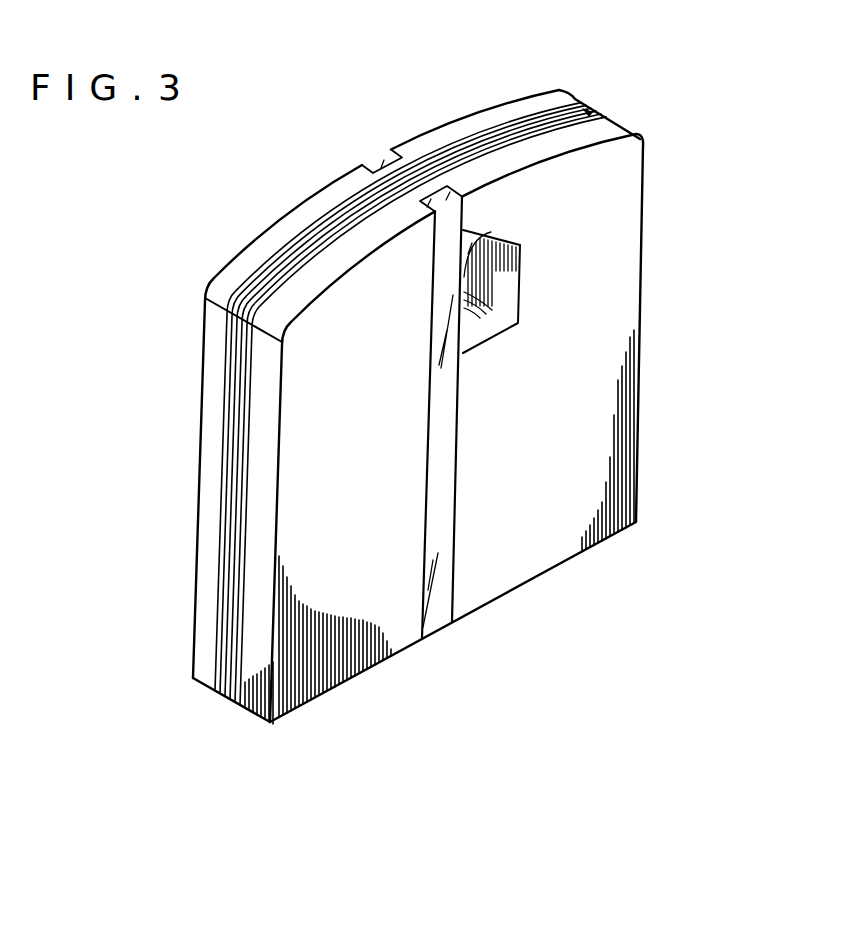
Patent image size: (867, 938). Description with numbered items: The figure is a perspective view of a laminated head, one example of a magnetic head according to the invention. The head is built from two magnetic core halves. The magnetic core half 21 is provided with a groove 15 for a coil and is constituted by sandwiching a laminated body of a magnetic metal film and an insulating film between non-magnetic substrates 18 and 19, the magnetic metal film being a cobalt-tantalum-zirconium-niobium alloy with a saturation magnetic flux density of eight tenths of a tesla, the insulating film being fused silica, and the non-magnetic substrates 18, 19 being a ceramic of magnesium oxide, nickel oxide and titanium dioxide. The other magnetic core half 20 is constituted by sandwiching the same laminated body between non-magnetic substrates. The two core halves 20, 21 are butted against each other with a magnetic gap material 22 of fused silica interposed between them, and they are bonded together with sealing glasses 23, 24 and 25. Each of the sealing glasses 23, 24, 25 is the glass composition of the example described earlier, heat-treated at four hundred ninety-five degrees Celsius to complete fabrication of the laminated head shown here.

The groove 15 is at (503, 283).
The non-magnetic substrate 18 is at (574, 138).
The non-magnetic substrate 19 is at (522, 110).
The magnetic core half 20 is at (326, 575).
The magnetic core half 21 is at (553, 465).
The magnetic gap material 22 is at (420, 187).
The sealing glass 23 is at (447, 535).
The sealing glass 24 is at (376, 166).
The sealing glass 25 is at (485, 242).